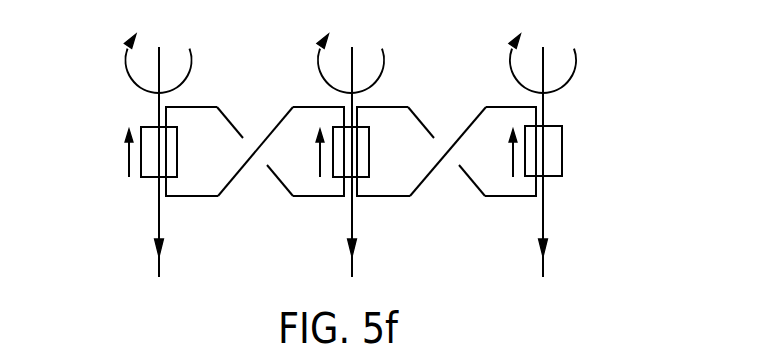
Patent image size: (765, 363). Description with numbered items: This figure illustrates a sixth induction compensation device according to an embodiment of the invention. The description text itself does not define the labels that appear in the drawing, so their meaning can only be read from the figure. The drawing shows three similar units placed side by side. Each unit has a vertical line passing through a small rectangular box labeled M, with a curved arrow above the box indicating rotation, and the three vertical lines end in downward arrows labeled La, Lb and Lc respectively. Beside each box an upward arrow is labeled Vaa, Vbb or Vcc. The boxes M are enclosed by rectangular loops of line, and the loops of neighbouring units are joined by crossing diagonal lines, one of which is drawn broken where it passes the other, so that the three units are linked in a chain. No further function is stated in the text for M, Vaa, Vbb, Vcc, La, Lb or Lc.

The motor M is at (360, 145).
The voltage Vaa is at (113, 155).
The voltage Vbb is at (305, 155).
The voltage Vcc is at (498, 155).
The load current La is at (172, 245).
The load current Lb is at (365, 245).
The load current Lc is at (556, 245).